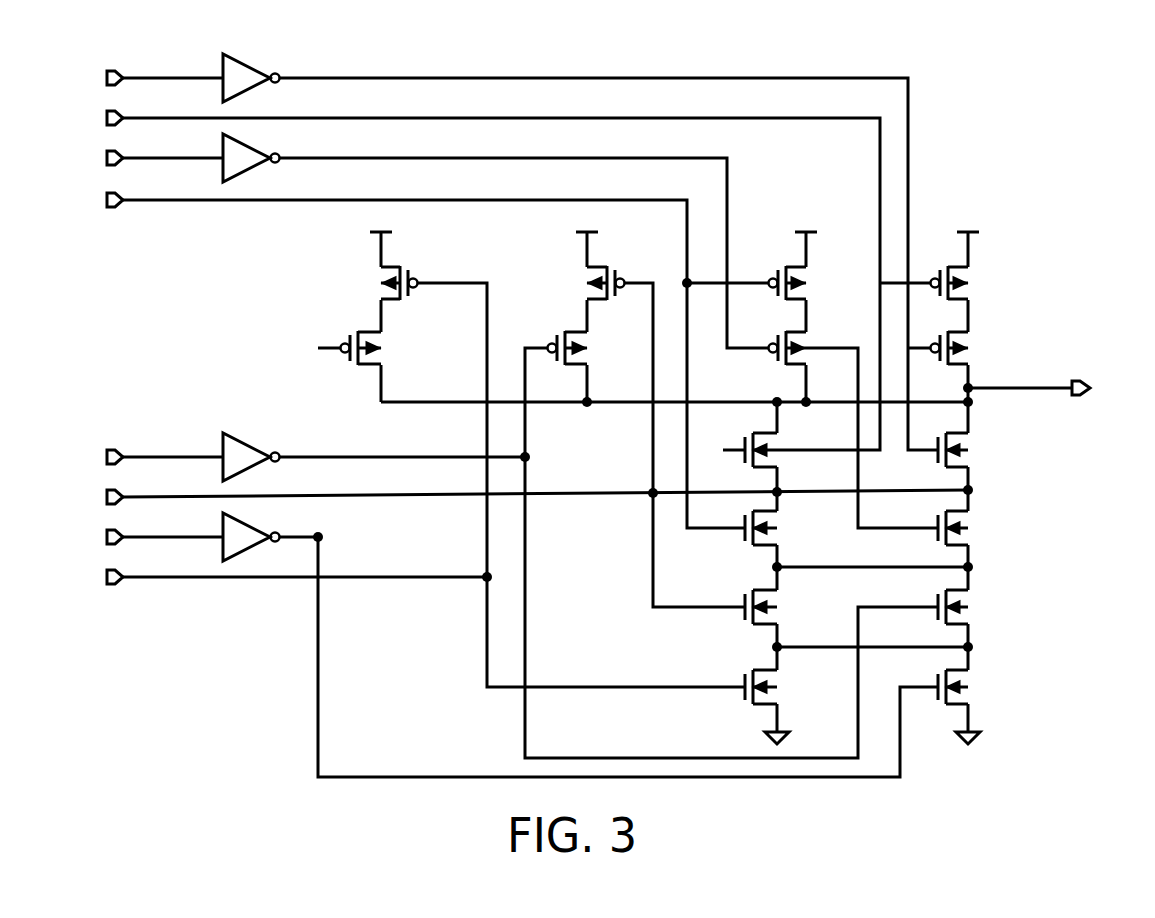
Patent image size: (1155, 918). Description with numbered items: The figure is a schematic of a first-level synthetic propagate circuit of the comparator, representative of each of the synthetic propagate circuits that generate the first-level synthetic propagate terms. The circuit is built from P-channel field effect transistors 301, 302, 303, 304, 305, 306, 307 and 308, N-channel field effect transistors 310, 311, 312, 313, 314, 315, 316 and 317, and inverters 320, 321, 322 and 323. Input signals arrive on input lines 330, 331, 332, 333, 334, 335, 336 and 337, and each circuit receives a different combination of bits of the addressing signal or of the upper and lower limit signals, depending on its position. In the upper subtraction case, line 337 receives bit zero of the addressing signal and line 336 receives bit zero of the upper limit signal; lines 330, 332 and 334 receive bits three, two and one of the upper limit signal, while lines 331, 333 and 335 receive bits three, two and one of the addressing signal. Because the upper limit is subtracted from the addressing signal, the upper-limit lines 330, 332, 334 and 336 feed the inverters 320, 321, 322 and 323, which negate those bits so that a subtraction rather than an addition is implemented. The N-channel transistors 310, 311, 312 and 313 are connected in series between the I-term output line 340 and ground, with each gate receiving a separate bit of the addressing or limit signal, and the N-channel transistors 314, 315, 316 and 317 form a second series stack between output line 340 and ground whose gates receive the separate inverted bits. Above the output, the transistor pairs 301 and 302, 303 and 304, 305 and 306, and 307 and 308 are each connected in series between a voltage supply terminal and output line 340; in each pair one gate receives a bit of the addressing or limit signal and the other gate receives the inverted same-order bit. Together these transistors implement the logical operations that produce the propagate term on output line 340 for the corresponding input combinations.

The P-channel field effect transistor 301 is at (386, 270).
The P-channel field effect transistor 302 is at (376, 348).
The P-channel field effect transistor 303 is at (596, 270).
The P-channel field effect transistor 304 is at (585, 348).
The P-channel field effect transistor 305 is at (798, 280).
The P-channel field effect transistor 306 is at (798, 348).
The P-channel field effect transistor 307 is at (960, 280).
The P-channel field effect transistor 308 is at (960, 348).
The N-channel field effect transistor 310 is at (766, 447).
The N-channel field effect transistor 311 is at (766, 525).
The N-channel field effect transistor 312 is at (766, 604).
The N-channel field effect transistor 313 is at (766, 684).
The N-channel field effect transistor 314 is at (957, 447).
The N-channel field effect transistor 315 is at (957, 525).
The N-channel field effect transistor 316 is at (957, 604).
The N-channel field effect transistor 317 is at (957, 684).
The inverter 320 is at (238, 62).
The inverter 321 is at (245, 170).
The inverter 322 is at (238, 441).
The inverter 323 is at (245, 549).
The input line 330 is at (127, 78).
The input line 331 is at (127, 118).
The input line 332 is at (127, 158).
The input line 333 is at (127, 200).
The input line 334 is at (127, 457).
The input line 335 is at (127, 497).
The input line 336 is at (127, 537).
The input line 337 is at (127, 577).
The I-term output line 340 is at (1040, 388).